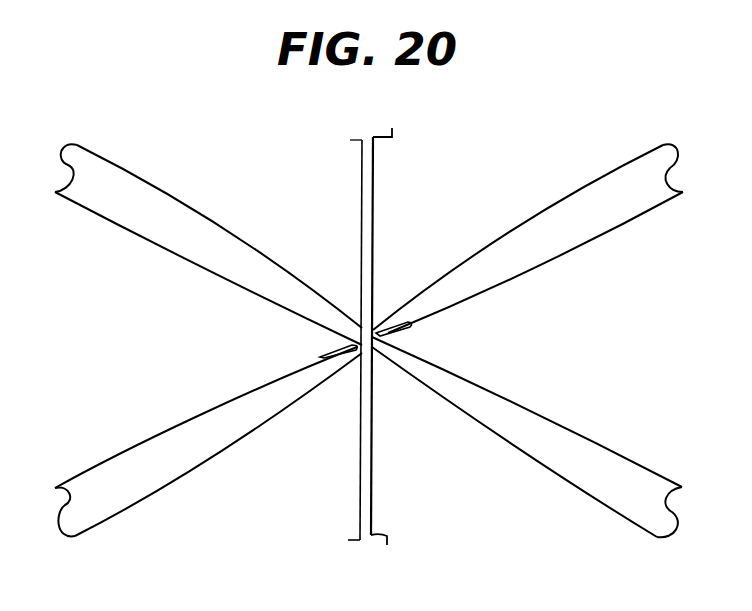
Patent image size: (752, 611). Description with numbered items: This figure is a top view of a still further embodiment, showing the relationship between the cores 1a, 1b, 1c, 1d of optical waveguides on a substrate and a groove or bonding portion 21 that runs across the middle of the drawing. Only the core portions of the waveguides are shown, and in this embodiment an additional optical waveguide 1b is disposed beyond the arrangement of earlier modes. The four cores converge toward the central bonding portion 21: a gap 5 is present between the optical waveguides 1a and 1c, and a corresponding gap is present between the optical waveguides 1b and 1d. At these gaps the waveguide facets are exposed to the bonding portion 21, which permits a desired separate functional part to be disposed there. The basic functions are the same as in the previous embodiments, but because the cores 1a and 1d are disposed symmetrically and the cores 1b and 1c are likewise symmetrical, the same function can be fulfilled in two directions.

The rotating shaft 21 is at (373, 200).
The core of optical waveguide 1a is at (128, 186).
The core of optical waveguide 1b is at (625, 205).
The core of optical waveguide 1c is at (137, 478).
The core of optical waveguide 1d is at (575, 442).
The gap 5 is at (318, 355).